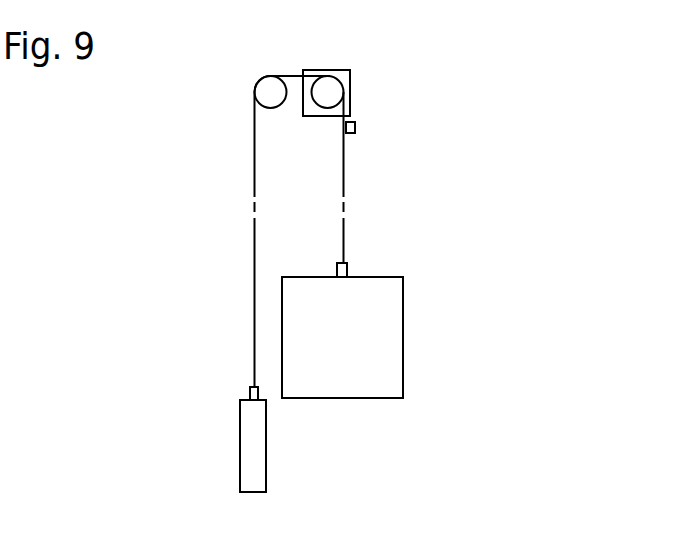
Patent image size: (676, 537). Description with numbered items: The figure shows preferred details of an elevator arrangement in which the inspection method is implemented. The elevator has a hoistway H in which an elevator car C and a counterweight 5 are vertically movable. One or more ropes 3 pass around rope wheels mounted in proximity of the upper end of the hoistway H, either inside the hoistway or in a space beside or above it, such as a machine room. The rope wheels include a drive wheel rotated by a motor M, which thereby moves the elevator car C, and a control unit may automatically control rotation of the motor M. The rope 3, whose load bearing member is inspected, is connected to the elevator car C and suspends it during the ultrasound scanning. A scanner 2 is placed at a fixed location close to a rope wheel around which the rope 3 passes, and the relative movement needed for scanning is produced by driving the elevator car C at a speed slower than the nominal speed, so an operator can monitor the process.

The motor M is at (345, 70).
The rope 3 is at (254, 322).
The hoistway H is at (305, 165).
The sensor 2 is at (357, 128).
The elevator car C is at (360, 357).
The counterweight 5 is at (266, 443).